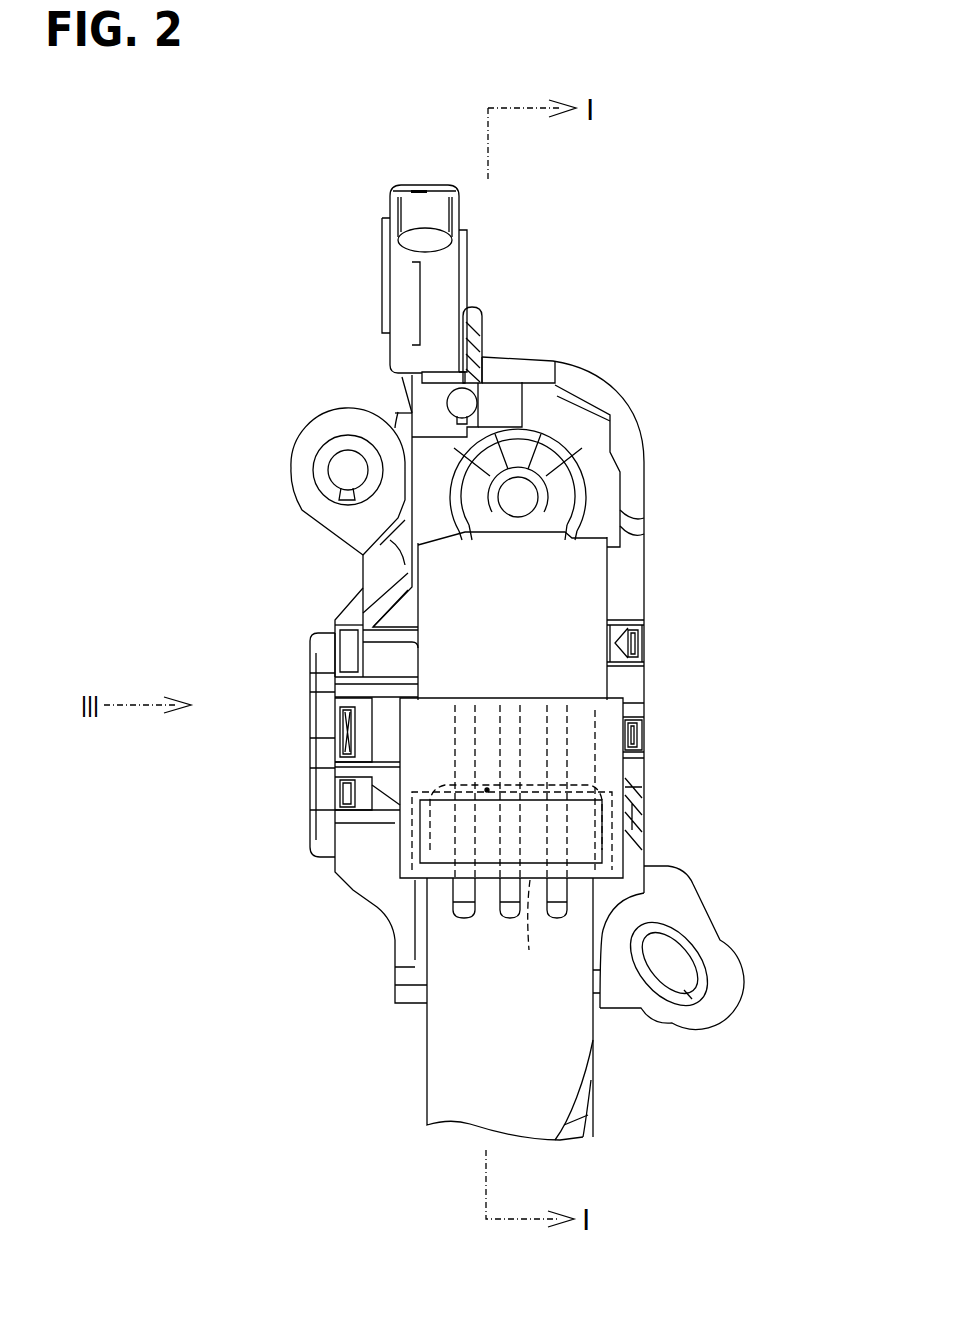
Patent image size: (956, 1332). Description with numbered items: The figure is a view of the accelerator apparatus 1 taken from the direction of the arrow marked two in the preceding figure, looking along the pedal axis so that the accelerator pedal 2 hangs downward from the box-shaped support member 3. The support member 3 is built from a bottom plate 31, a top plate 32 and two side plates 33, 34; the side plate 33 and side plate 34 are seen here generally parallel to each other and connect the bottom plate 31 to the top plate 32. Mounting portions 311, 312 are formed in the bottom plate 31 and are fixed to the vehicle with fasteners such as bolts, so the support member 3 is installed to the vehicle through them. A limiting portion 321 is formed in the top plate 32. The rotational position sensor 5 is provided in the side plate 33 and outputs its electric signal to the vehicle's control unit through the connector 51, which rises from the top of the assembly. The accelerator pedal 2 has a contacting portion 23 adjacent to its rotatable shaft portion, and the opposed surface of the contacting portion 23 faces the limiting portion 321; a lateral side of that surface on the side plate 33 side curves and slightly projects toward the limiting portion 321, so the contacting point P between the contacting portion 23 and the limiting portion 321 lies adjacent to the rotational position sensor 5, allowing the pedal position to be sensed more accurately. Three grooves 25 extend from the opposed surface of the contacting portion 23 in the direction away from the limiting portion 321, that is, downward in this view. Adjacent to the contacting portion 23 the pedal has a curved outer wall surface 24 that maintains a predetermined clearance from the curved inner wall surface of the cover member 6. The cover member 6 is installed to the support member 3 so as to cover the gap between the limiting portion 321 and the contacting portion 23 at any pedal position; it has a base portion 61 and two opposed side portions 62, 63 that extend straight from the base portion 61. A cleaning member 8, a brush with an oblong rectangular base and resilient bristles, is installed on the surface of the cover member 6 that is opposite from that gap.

The accelerator apparatus 1 is at (652, 382).
The accelerator pedal 2 is at (440, 1097).
The support member 3 is at (607, 598).
The rotational position sensor 5 is at (338, 717).
The cover member 6 is at (575, 755).
The cleaning member 8 is at (600, 855).
The contacting portion 23 is at (512, 880).
The curved outer wall surface 24 is at (540, 826).
The grooves 25 is at (465, 885).
The bottom plate 31 is at (412, 412).
The mounting portion 311 is at (305, 460).
The mounting portion 312 is at (718, 988).
The top plate 32 is at (465, 600).
The limiting portion 321 is at (527, 932).
The side plate 33 is at (355, 652).
The side plate 34 is at (607, 682).
The connector 51 is at (386, 291).
The base portion 61 is at (445, 768).
The side portion 62 is at (395, 822).
The side portion 63 is at (628, 792).
The contacting point P is at (487, 790).